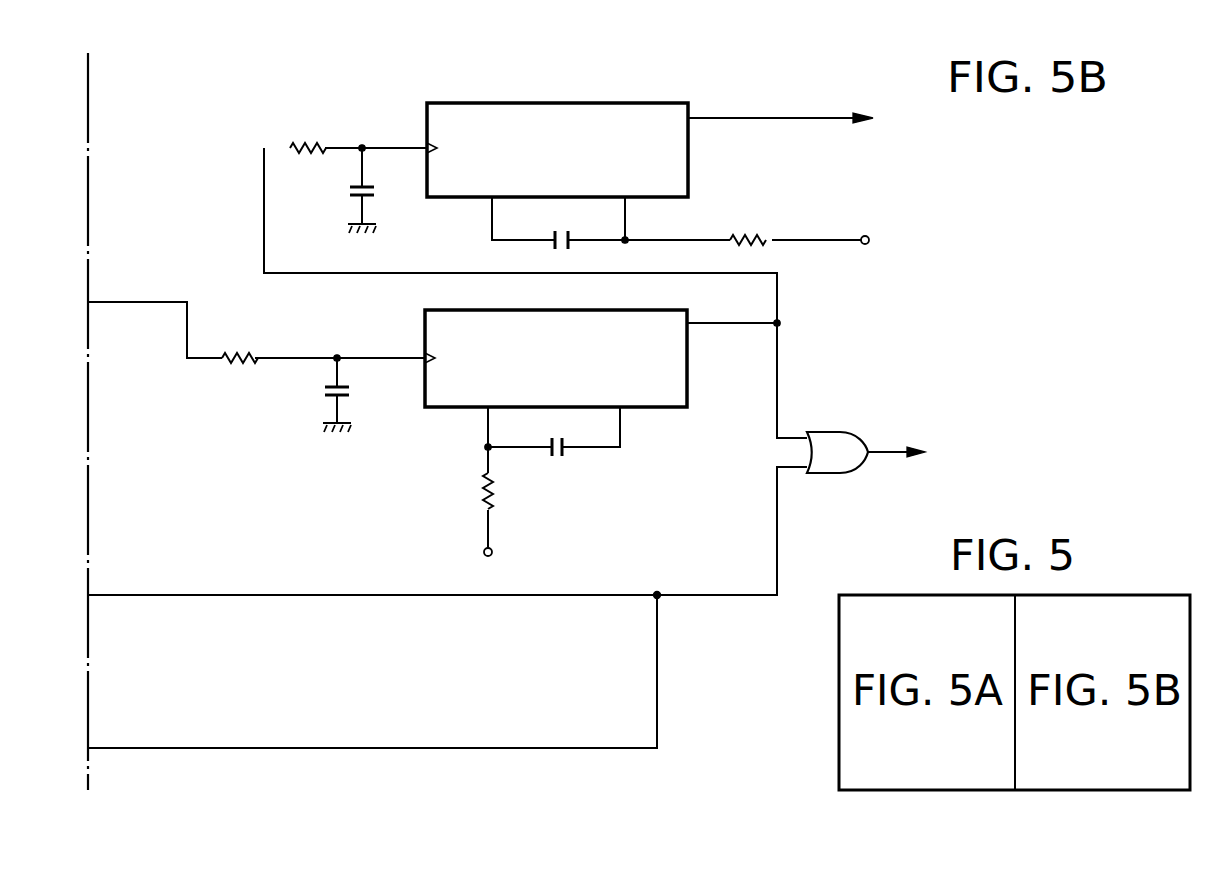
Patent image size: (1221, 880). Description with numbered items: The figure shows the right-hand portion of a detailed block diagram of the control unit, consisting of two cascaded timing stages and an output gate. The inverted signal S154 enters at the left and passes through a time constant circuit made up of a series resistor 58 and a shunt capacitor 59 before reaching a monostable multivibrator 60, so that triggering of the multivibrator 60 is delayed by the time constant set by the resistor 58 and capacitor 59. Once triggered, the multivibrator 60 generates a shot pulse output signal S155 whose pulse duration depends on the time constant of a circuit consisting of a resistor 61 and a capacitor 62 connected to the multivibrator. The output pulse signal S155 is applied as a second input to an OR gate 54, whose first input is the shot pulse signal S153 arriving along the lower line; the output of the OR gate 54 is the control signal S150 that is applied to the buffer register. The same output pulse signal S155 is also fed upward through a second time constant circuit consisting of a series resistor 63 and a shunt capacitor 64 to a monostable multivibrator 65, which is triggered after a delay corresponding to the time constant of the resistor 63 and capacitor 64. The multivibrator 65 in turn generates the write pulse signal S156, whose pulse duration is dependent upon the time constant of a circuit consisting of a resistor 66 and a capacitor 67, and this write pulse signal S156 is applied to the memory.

The OR gate 54 is at (830, 475).
The series resistor 58 is at (243, 355).
The shunt capacitor 59 is at (324, 392).
The monostable multivibrator 60 is at (423, 322).
The resistor 61 is at (480, 490).
The capacitor 62 is at (558, 460).
The series resistor 63 is at (312, 144).
The shunt capacitor 64 is at (348, 190).
The monostable multivibrator 65 is at (426, 122).
The resistor 66 is at (752, 235).
The capacitor 67 is at (562, 232).
The control signal S150 is at (895, 450).
The shot pulse signal S153 is at (718, 594).
The inverted signal S154 is at (186, 336).
The shot pulse output signal S155 is at (778, 360).
The write pulse signal S156 is at (753, 120).